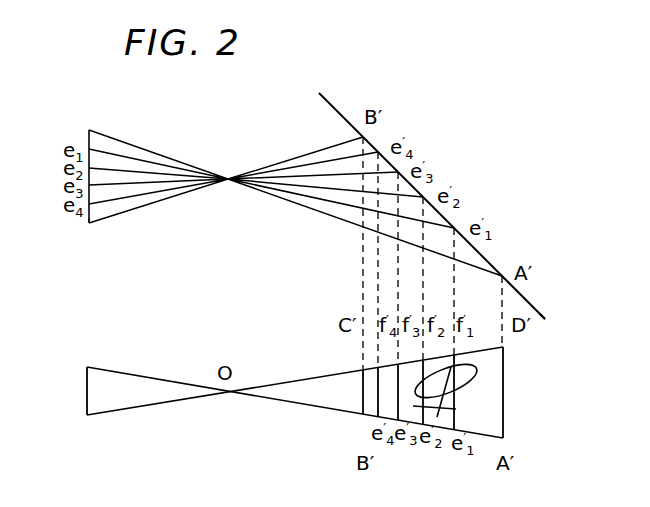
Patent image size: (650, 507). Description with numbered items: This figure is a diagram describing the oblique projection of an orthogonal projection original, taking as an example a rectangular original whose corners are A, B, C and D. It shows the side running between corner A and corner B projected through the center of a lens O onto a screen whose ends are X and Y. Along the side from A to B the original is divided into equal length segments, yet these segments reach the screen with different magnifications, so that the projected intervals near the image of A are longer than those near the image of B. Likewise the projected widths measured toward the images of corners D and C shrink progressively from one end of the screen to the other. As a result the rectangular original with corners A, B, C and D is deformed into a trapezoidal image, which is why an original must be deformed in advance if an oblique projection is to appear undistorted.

The center of a lens O is at (295, 203).
The corner A of the rectangular original A is at (75, 165).
The corner B of the rectangular original B is at (75, 230).
The end X of screen XY X is at (432, 196).
The end Y of screen XY Y is at (550, 314).
The corner C of the rectangular original C is at (268, 387).
The corner D of the rectangular original D is at (268, 397).